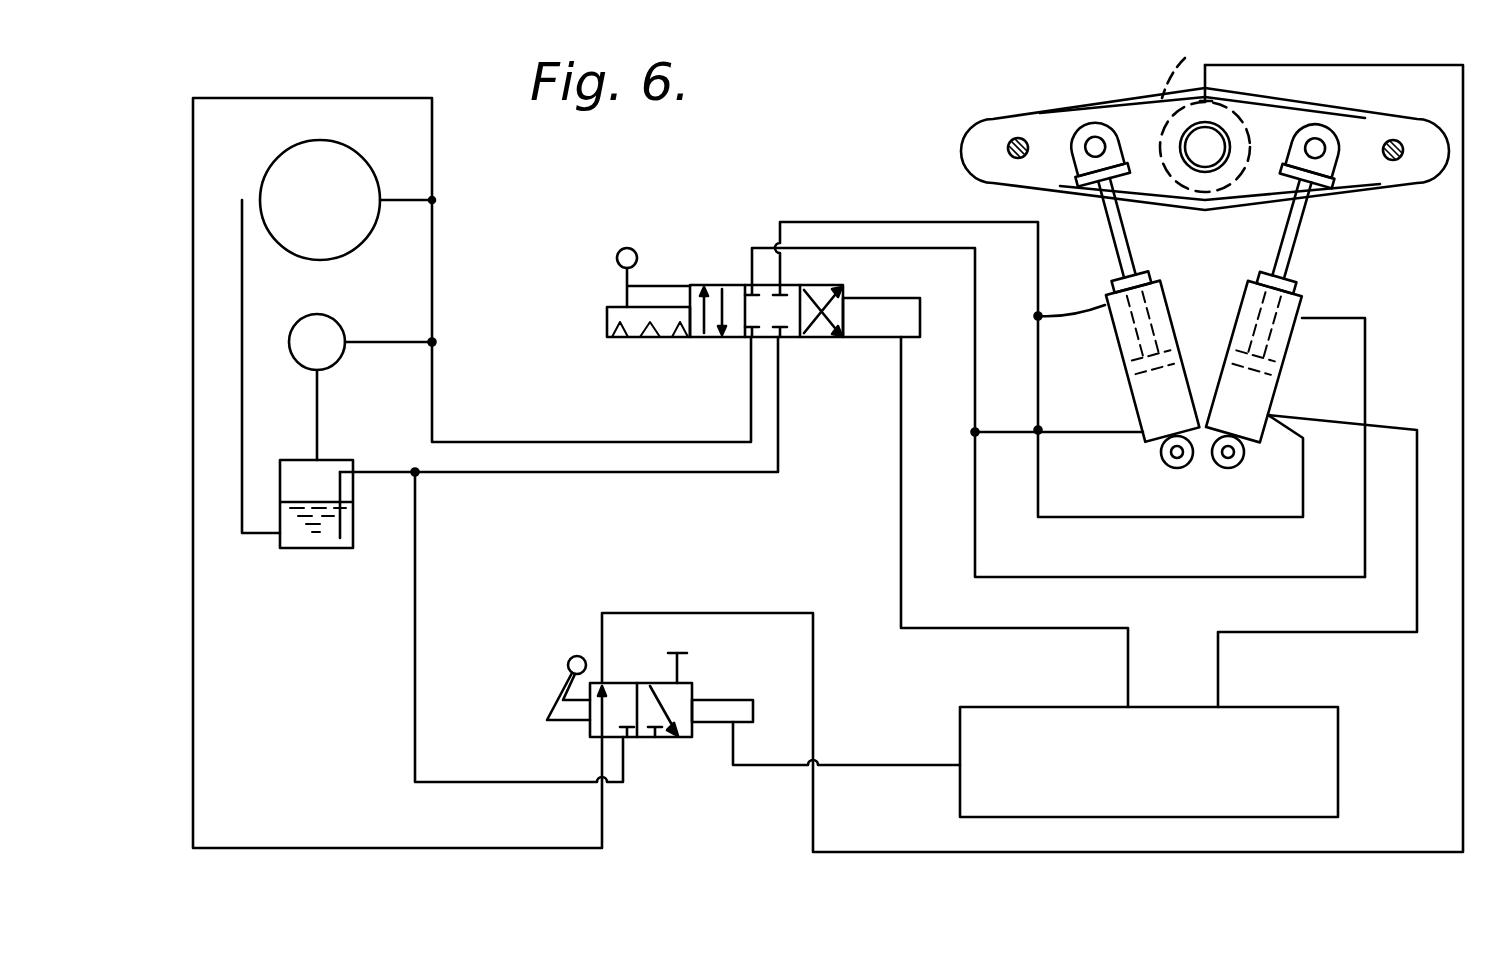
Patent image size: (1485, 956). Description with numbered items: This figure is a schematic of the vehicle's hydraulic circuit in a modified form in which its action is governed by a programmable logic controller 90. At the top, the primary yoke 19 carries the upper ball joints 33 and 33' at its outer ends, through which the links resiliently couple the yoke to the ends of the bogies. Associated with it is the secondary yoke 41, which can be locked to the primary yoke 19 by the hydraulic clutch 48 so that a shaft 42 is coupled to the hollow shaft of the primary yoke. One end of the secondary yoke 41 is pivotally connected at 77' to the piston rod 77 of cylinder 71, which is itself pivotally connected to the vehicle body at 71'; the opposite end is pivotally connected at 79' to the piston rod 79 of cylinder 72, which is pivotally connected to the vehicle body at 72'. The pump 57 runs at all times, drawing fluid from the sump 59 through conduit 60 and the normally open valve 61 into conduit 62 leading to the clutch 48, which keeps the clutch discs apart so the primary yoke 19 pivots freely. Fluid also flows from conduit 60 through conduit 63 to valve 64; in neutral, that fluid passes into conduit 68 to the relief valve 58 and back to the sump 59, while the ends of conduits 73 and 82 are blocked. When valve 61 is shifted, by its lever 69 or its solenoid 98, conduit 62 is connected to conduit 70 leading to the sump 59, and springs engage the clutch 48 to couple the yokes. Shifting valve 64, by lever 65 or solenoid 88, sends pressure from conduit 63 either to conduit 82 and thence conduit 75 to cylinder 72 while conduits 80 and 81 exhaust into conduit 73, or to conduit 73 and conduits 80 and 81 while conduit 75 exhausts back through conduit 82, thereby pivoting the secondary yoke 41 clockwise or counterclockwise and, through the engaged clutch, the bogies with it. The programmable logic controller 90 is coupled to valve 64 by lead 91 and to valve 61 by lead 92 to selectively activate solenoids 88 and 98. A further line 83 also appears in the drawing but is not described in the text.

The primary yoke 19 is at (1382, 182).
The upper ball joint 33 is at (1410, 124).
The upper ball joint 33' is at (997, 121).
The secondary yoke 41 is at (1268, 182).
The shaft 42 is at (1200, 157).
The hydraulic clutch 48 is at (1184, 66).
The pump 57 is at (280, 152).
The relief valve 58 is at (334, 320).
The sump 59 is at (300, 545).
The conduit 60 is at (193, 688).
The normally open valve 61 is at (700, 740).
The conduit 62 is at (750, 613).
The conduit 63 is at (432, 306).
The valve 64 is at (712, 340).
The lever 65 is at (618, 252).
The conduit 68 is at (358, 348).
The lever 69 is at (566, 668).
The conduit 70 is at (414, 660).
The cylinder 71 is at (1138, 355).
The pivotal connection 71' is at (1143, 461).
The cylinder 72 is at (1272, 355).
The pivotal connection 72' is at (1227, 470).
The conduit 73 is at (952, 222).
The conduit 75 is at (1365, 332).
The piston rod 77 is at (1101, 228).
The pivotal connection 77' is at (1092, 122).
The piston rod 79 is at (1318, 228).
The pivotal connection 79' is at (1331, 131).
The conduit 80 is at (1062, 322).
The conduit 81 is at (1272, 518).
The conduit 82 is at (975, 380).
The signal line 83 is at (1394, 431).
The solenoid 88 is at (886, 340).
The programmable logic controller 90 is at (1338, 737).
The lead 91 is at (901, 530).
The lead 92 is at (896, 764).
The solenoid 98 is at (775, 676).